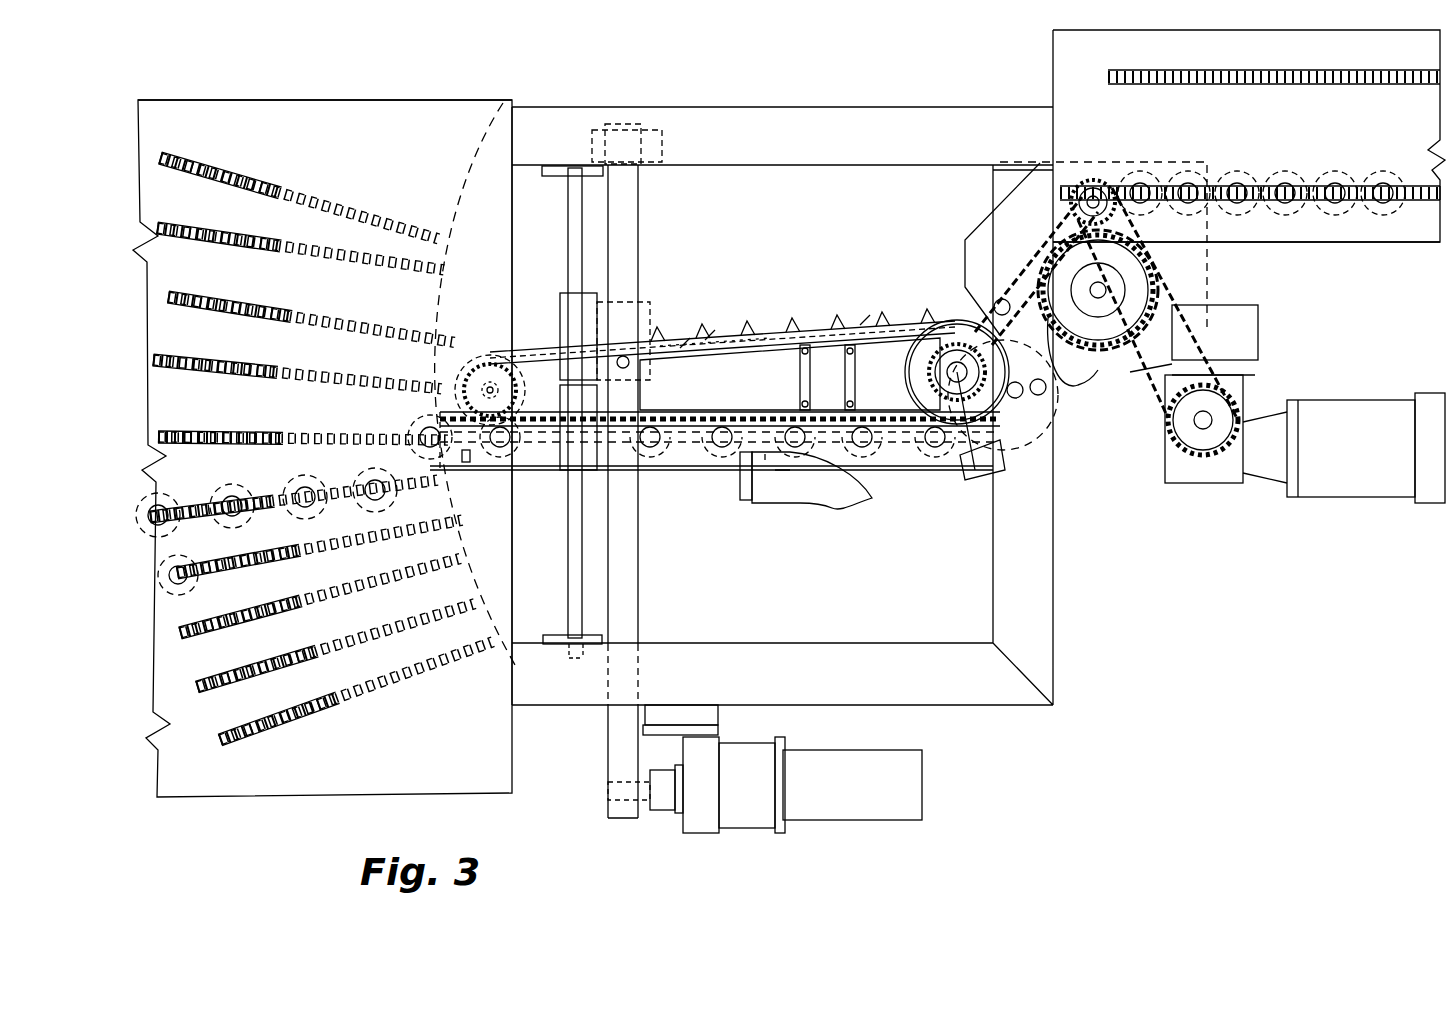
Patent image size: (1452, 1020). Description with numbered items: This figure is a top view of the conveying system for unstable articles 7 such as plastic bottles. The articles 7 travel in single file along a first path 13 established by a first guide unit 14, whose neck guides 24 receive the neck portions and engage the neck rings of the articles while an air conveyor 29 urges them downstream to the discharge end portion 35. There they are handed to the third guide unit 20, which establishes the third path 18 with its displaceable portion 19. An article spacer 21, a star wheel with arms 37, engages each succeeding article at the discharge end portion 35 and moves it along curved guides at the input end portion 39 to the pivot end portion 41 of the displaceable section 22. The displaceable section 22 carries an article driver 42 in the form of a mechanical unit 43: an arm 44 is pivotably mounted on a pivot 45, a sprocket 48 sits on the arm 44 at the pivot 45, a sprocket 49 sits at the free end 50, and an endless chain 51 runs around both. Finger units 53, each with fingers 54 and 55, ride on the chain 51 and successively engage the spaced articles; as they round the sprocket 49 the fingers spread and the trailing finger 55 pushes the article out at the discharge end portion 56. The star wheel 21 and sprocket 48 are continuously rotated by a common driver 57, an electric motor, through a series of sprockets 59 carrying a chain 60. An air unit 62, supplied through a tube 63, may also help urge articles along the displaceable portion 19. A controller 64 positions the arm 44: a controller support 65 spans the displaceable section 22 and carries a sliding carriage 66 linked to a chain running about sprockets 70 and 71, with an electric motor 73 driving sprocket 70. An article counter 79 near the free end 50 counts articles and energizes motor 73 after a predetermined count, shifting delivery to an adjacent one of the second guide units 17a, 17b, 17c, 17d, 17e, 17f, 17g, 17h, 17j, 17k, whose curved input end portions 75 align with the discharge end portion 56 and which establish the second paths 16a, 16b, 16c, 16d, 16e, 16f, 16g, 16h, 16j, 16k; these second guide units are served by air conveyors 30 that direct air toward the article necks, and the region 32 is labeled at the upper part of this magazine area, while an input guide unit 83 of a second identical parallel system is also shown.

The unstable articles 7 is at (1290, 185).
The first path 13 is at (1363, 200).
The first guide unit 14 is at (1412, 200).
The second path 16a is at (392, 710).
The second path 16b is at (358, 655).
The second path 16c is at (328, 615).
The second path 16d is at (345, 555).
The second path 16e is at (297, 510).
The second path 16f is at (300, 450).
The second path 16g is at (312, 390).
The second path 16h is at (312, 325).
The second path 16j is at (307, 255).
The second path 16k is at (345, 215).
The second guide unit 17a is at (270, 752).
The second guide unit 17b is at (265, 698).
The second guide unit 17c is at (250, 640).
The second guide unit 17d is at (262, 580).
The second guide unit 17e is at (160, 520).
The second guide unit 17f is at (232, 455).
The second guide unit 17g is at (232, 392).
The second guide unit 17h is at (230, 325).
The second guide unit 17j is at (228, 258).
The second guide unit 17k is at (243, 196).
The third path 18 is at (900, 455).
The displaceable portion 19 is at (705, 458).
The third guide unit 20 is at (935, 600).
The article spacer 21 is at (1072, 387).
The displaceable section 22 is at (838, 278).
The guides 24 is at (1385, 150).
The air conveyor 29 is at (1322, 243).
The air conveyors 30 is at (290, 100).
The magazine housing 32 is at (375, 110).
The discharge end portion 35 is at (1095, 178).
The arms 37 is at (1102, 330).
The input end portion 39 is at (1010, 162).
The pivot end portion 41 is at (952, 325).
The article driver 42 is at (800, 330).
The mechanical unit 43 is at (742, 335).
The arm 44 is at (680, 450).
The pivot 45 is at (995, 445).
The sprocket 48 is at (905, 370).
The sprocket 49 is at (490, 352).
The free end 50 is at (480, 345).
The endless chain 51 is at (868, 320).
The finger units 53 is at (775, 338).
The finger 54 is at (712, 338).
The trailing finger 55 is at (690, 345).
The discharge end portion 56 is at (495, 455).
The common driver 57 is at (1370, 480).
The sprockets 59 is at (1108, 185).
The chain 60 is at (1258, 368).
The air unit 62 is at (758, 500).
The tube 63 is at (800, 498).
The controller 64 is at (563, 90).
The controller support 65 is at (640, 617).
The carriage 66 is at (648, 368).
The sprocket 70 is at (610, 800).
The sprocket 71 is at (625, 128).
The electric motor 73 is at (888, 770).
The input end portions 75 is at (500, 606).
The article counter 79 is at (477, 458).
The guide unit 83 is at (1228, 78).